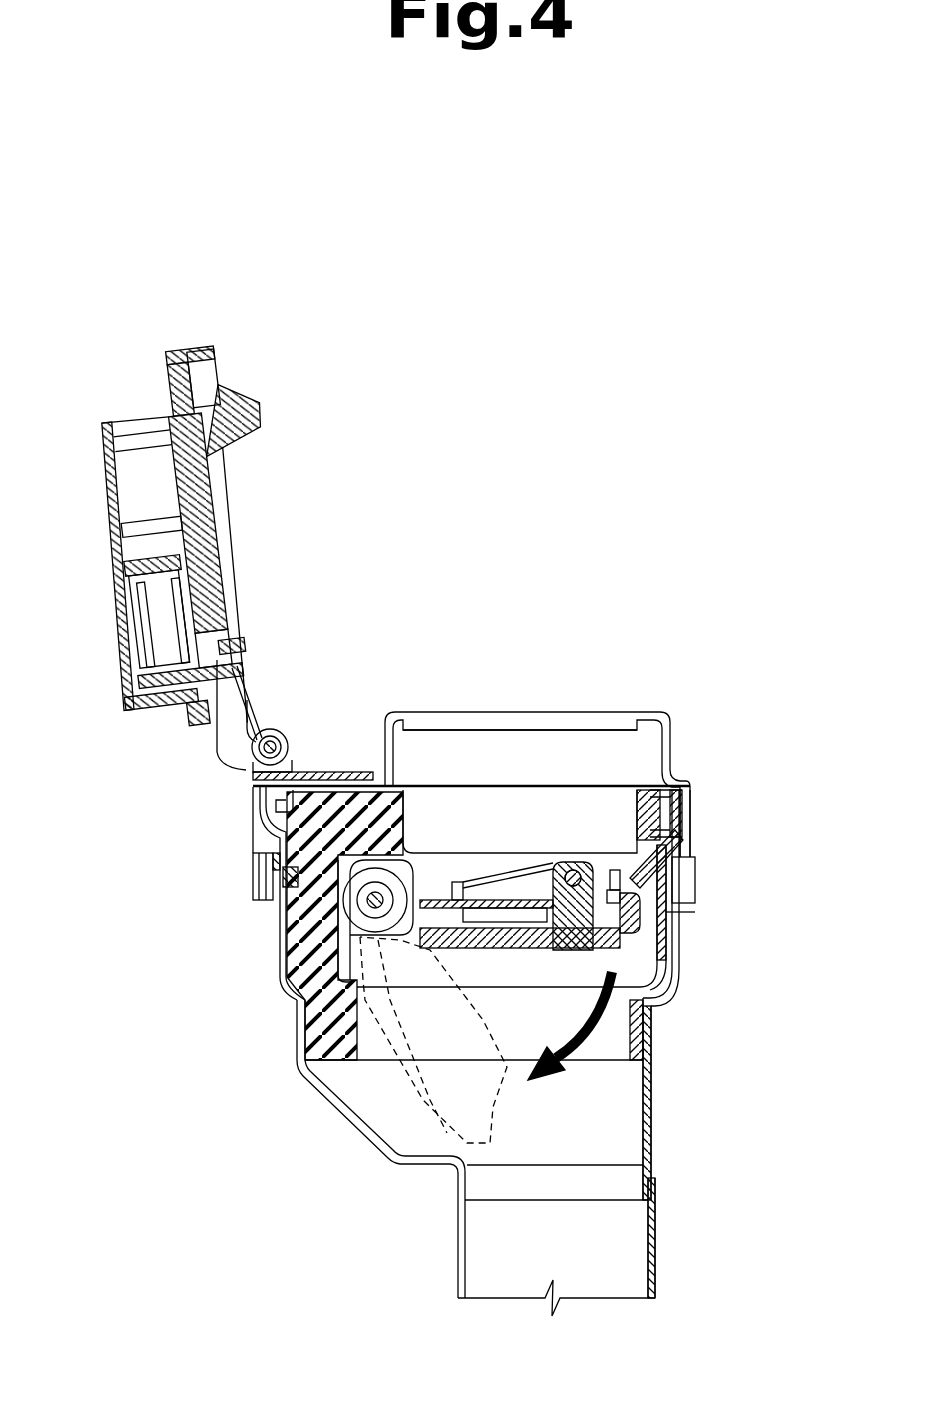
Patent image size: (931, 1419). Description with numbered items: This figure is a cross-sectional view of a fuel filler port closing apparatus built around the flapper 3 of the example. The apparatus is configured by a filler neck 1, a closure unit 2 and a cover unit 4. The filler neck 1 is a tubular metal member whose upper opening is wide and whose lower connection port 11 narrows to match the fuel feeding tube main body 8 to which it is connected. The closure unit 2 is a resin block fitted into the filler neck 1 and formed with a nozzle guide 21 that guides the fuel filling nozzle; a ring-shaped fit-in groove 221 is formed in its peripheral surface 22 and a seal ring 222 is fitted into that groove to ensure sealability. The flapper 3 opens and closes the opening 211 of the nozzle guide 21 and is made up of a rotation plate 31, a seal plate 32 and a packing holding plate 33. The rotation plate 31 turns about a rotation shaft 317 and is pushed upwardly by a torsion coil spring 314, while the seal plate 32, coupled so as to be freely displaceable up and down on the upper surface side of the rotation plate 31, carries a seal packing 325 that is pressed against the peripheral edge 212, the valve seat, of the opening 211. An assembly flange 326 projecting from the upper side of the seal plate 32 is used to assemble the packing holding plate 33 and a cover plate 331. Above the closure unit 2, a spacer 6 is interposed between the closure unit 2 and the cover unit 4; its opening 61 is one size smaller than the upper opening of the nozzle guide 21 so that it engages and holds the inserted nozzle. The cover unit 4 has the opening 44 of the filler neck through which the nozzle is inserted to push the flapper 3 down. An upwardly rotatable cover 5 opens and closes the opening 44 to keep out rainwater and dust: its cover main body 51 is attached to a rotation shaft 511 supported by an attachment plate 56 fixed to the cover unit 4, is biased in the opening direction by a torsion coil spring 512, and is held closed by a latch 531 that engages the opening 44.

The filler neck 1 is at (548, 1117).
The connection port 11 is at (612, 1178).
The fuel feeding tube main body 8 is at (658, 1225).
The closure unit 2 is at (729, 819).
The nozzle guide 21 is at (692, 822).
The opening 211 is at (698, 868).
The peripheral edge 212 is at (694, 911).
The peripheral surface 22 is at (226, 881).
The ring-shaped fit-in groove 221 is at (297, 868).
The seal ring 222 is at (297, 890).
The flapper 3 is at (582, 873).
The rotation plate 31 is at (683, 980).
The seal plate 32 is at (655, 952).
The seal packing 325 is at (670, 925).
The assembly flange 326 is at (588, 872).
The packing holding plate 33 is at (458, 884).
The cover plate 331 is at (528, 890).
The torsion coil spring 314 is at (347, 930).
The rotation shaft 317 is at (284, 942).
The cover unit 4 is at (596, 776).
The opening 44 is at (612, 722).
The cover 5 is at (190, 546).
The cover main body 51 is at (182, 365).
The rotation shaft 511 is at (262, 735).
The torsion coil spring 512 is at (247, 732).
The latch 531 is at (257, 423).
The attachment plate 56 is at (317, 770).
The spacer 6 is at (471, 848).
The opening 61 is at (440, 795).